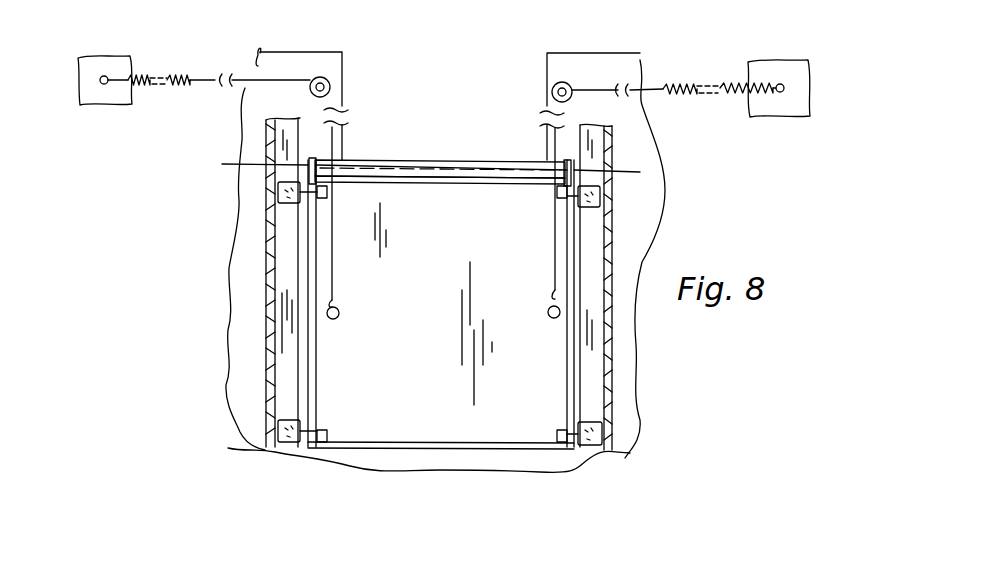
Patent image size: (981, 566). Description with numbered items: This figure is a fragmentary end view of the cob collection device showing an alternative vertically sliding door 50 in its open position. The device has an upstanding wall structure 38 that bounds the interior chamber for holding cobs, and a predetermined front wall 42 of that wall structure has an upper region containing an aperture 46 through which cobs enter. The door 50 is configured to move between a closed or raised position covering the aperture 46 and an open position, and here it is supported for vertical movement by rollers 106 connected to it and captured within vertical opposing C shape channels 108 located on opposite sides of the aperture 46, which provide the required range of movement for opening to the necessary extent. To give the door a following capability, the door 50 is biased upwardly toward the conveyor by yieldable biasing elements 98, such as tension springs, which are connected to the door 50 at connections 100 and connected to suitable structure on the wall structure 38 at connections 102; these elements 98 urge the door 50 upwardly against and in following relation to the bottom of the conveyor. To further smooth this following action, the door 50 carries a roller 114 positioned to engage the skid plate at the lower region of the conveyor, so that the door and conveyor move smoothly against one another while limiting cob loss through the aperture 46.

The upstanding wall structure 38 is at (632, 392).
The front wall 42 is at (628, 437).
The aperture 46 is at (373, 78).
The door 50 is at (440, 450).
The yieldable biasing elements 98 is at (173, 90).
The connections 100 is at (103, 76).
The connections 102 is at (340, 315).
The rollers 106 is at (282, 215).
The C shape channels 108 is at (287, 265).
The roller 114 is at (447, 160).